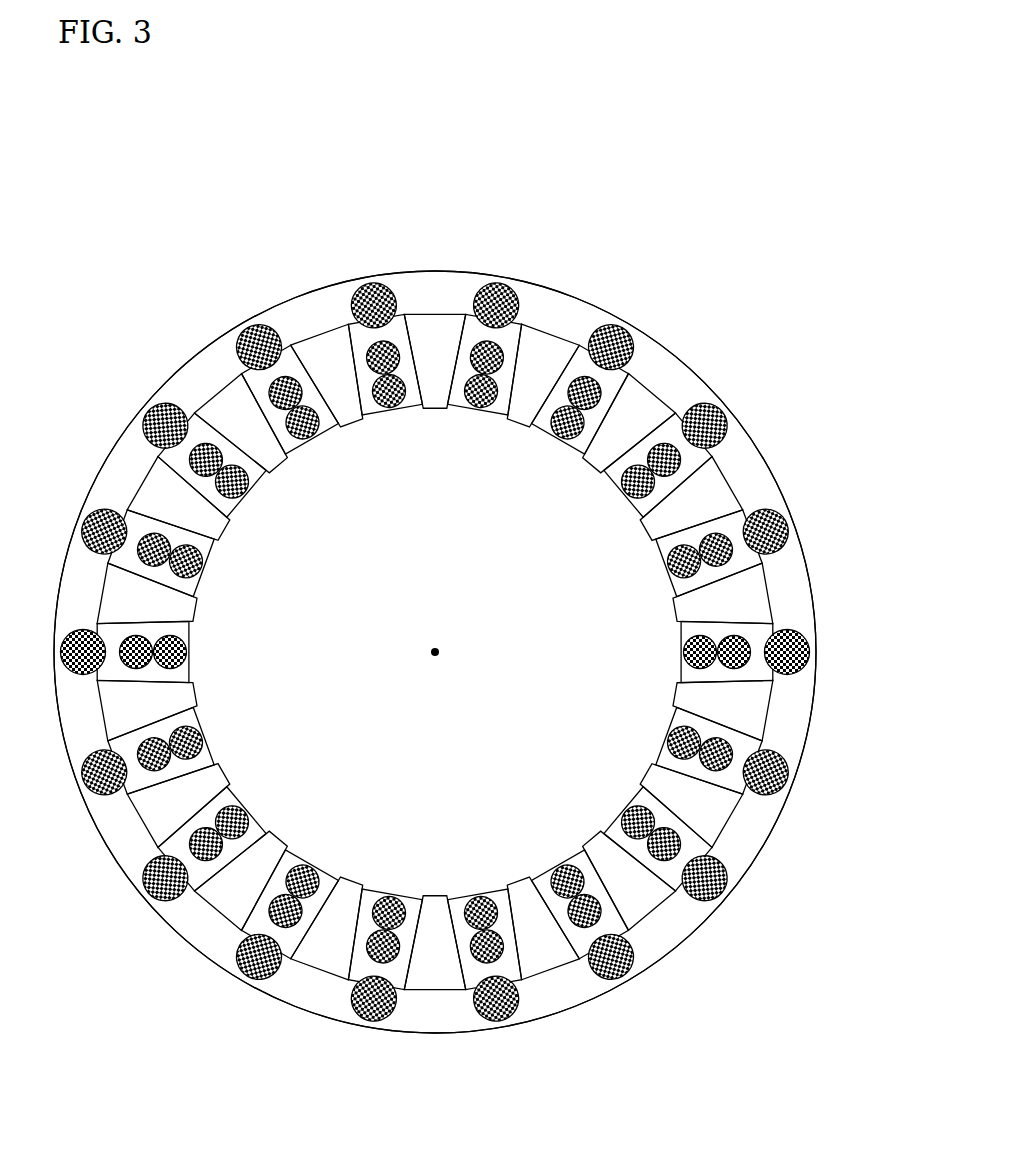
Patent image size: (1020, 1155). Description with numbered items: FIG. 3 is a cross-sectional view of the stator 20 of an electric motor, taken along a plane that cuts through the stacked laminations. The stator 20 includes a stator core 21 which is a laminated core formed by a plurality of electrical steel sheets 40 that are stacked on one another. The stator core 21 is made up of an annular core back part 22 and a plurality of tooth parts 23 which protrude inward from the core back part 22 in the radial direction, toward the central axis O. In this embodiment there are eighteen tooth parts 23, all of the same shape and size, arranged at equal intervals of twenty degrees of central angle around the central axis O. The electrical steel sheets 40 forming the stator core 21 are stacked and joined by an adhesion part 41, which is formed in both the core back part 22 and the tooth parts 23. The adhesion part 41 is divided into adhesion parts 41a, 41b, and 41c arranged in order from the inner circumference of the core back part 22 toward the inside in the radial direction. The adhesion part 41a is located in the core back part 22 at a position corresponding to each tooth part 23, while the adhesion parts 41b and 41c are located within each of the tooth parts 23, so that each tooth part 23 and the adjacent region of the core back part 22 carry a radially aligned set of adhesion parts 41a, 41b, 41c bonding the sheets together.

The stator 20 is at (735, 144).
The stator core 21 is at (420, 599).
The core back part 22 is at (655, 363).
The tooth parts 23 is at (580, 368).
The electrical steel sheets 40 is at (207, 367).
The adhesion part 41 is at (435, 554).
The adhesion part 41a is at (270, 325).
The adhesion part 41b is at (296, 378).
The adhesion part 41c is at (315, 407).
The central axis O is at (440, 648).